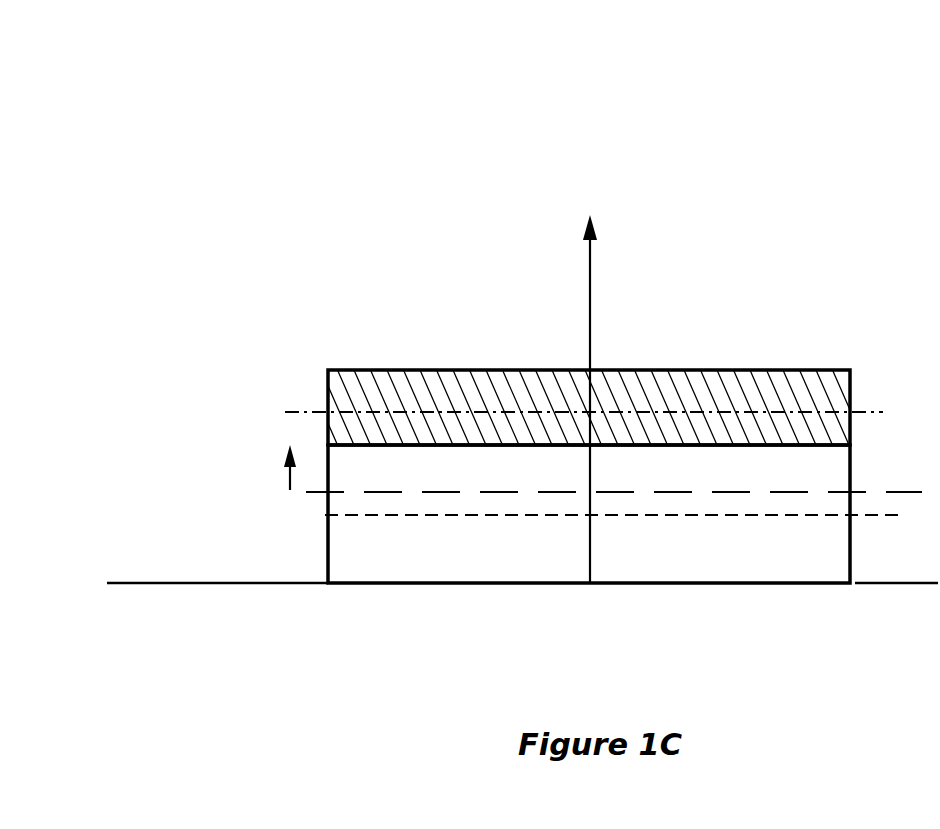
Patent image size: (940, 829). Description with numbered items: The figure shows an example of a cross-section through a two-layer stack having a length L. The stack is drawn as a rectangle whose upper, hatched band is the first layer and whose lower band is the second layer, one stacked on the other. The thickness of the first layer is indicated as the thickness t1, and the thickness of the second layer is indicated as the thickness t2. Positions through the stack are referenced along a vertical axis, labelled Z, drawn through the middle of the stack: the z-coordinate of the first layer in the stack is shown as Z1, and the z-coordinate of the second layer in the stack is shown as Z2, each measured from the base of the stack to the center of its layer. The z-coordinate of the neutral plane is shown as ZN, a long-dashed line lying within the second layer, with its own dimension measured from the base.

The thickness of the first layer t1 is at (328, 370).
The thickness of the second layer t2 is at (328, 445).
The z-coordinate of the first layer Z1 is at (285, 412).
The z-coordinate of the second layer Z2 is at (328, 515).
The z-coordinate of the neutral plane ZN is at (905, 502).
The length L is at (850, 590).
The Z axis Z is at (598, 396).